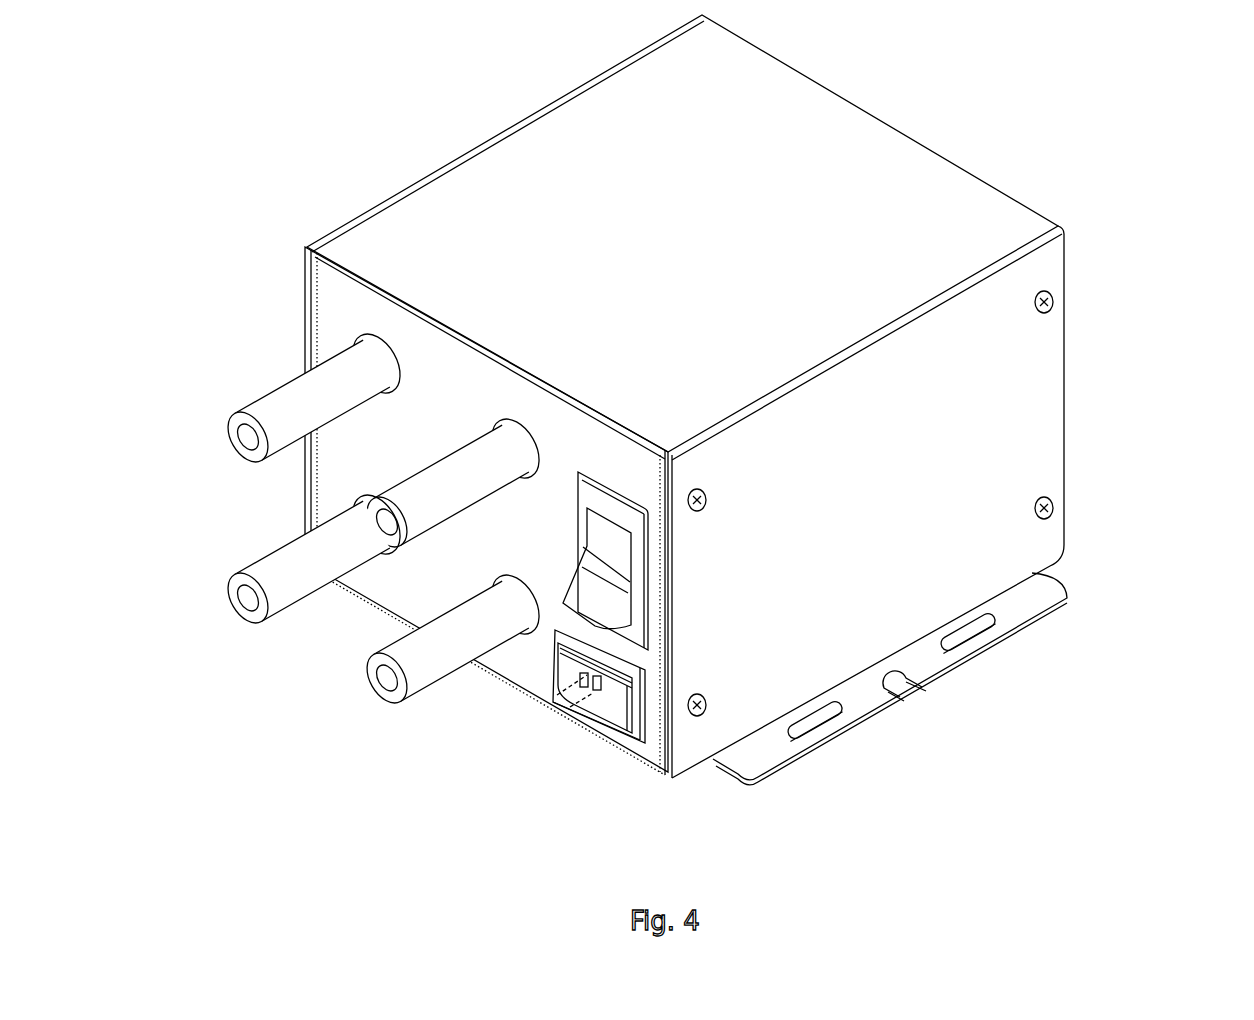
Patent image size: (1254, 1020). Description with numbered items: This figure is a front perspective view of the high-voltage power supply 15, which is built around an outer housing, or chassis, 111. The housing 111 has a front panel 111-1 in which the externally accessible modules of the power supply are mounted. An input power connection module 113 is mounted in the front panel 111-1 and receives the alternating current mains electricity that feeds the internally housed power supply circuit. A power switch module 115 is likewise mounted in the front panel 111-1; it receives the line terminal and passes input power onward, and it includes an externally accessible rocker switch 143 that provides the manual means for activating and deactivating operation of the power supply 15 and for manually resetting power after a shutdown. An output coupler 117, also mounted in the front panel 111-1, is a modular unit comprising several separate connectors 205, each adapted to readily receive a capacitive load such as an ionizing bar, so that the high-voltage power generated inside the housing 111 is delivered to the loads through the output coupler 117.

The power supply 15 is at (671, 404).
The outer housing 111 is at (1023, 395).
The front panel 111-1 is at (335, 292).
The output coupler 117 is at (282, 384).
The connectors 205 is at (303, 592).
The power switch module 115 is at (665, 479).
The rocker switch 143 is at (622, 608).
The input power connection module 113 is at (620, 732).